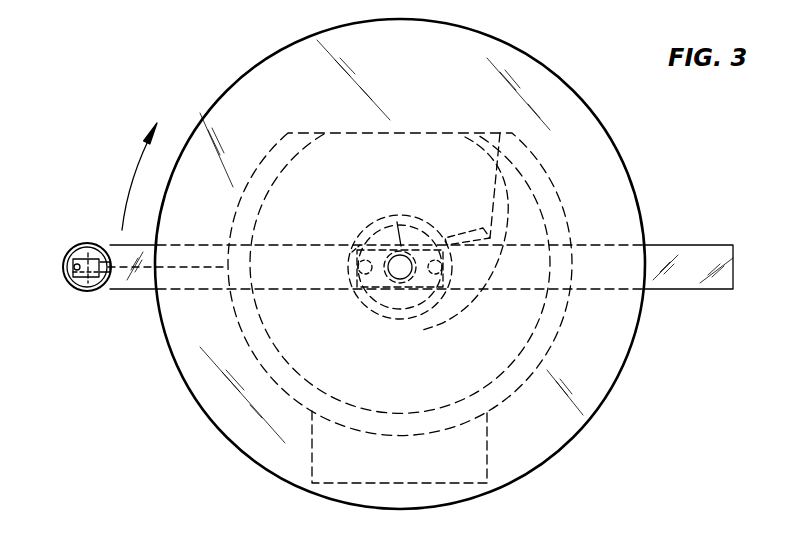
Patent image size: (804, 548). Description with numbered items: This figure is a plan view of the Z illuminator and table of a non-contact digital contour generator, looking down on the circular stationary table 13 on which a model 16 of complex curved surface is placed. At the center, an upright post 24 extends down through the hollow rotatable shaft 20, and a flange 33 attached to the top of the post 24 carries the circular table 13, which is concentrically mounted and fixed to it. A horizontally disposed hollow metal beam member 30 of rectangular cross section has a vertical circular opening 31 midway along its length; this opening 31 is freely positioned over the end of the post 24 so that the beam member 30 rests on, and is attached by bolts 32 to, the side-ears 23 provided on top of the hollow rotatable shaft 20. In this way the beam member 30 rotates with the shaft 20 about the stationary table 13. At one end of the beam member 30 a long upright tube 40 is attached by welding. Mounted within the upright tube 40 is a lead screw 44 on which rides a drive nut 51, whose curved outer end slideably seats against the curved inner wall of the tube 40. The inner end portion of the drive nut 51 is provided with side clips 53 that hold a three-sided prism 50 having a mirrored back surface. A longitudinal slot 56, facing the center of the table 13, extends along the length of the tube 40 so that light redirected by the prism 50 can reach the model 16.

The circular stationary table 13 is at (533, 62).
The model 16 is at (278, 392).
The hollow rotatable shaft 20 is at (398, 283).
The side-ears 23 is at (352, 252).
The upright post 24 is at (418, 228).
The hollow metal beam member 30 is at (692, 247).
The vertical circular opening 31 is at (420, 328).
The bolts 32 is at (362, 283).
The flange 33 is at (397, 222).
The upright tube 40 is at (85, 245).
The lead screw 44 is at (70, 258).
The three-sided prism 50 is at (108, 288).
The drive nut 51 is at (72, 272).
The side clips 53 is at (95, 252).
The longitudinal slot 56 is at (110, 262).